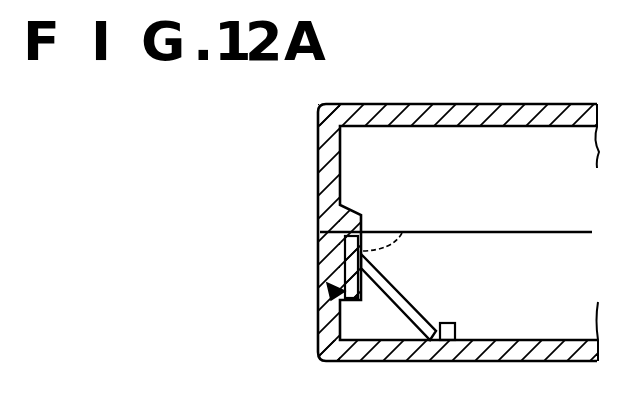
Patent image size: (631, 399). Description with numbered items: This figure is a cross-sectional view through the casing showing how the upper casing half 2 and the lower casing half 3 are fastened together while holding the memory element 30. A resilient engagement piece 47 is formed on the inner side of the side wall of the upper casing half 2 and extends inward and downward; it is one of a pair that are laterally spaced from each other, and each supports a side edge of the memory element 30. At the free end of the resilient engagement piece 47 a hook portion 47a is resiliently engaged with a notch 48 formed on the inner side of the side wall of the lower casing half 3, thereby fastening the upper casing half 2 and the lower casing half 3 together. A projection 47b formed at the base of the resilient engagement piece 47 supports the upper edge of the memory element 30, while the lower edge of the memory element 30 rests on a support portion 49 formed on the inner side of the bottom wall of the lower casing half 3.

The upper casing half 2 is at (557, 112).
The lower casing half 3 is at (530, 362).
The memory element 30 is at (400, 298).
The resilient engagement piece 47 is at (353, 211).
The hook portion 47a is at (320, 306).
The projection 47b is at (405, 228).
The notch 48 is at (318, 273).
The support portion 49 is at (452, 322).